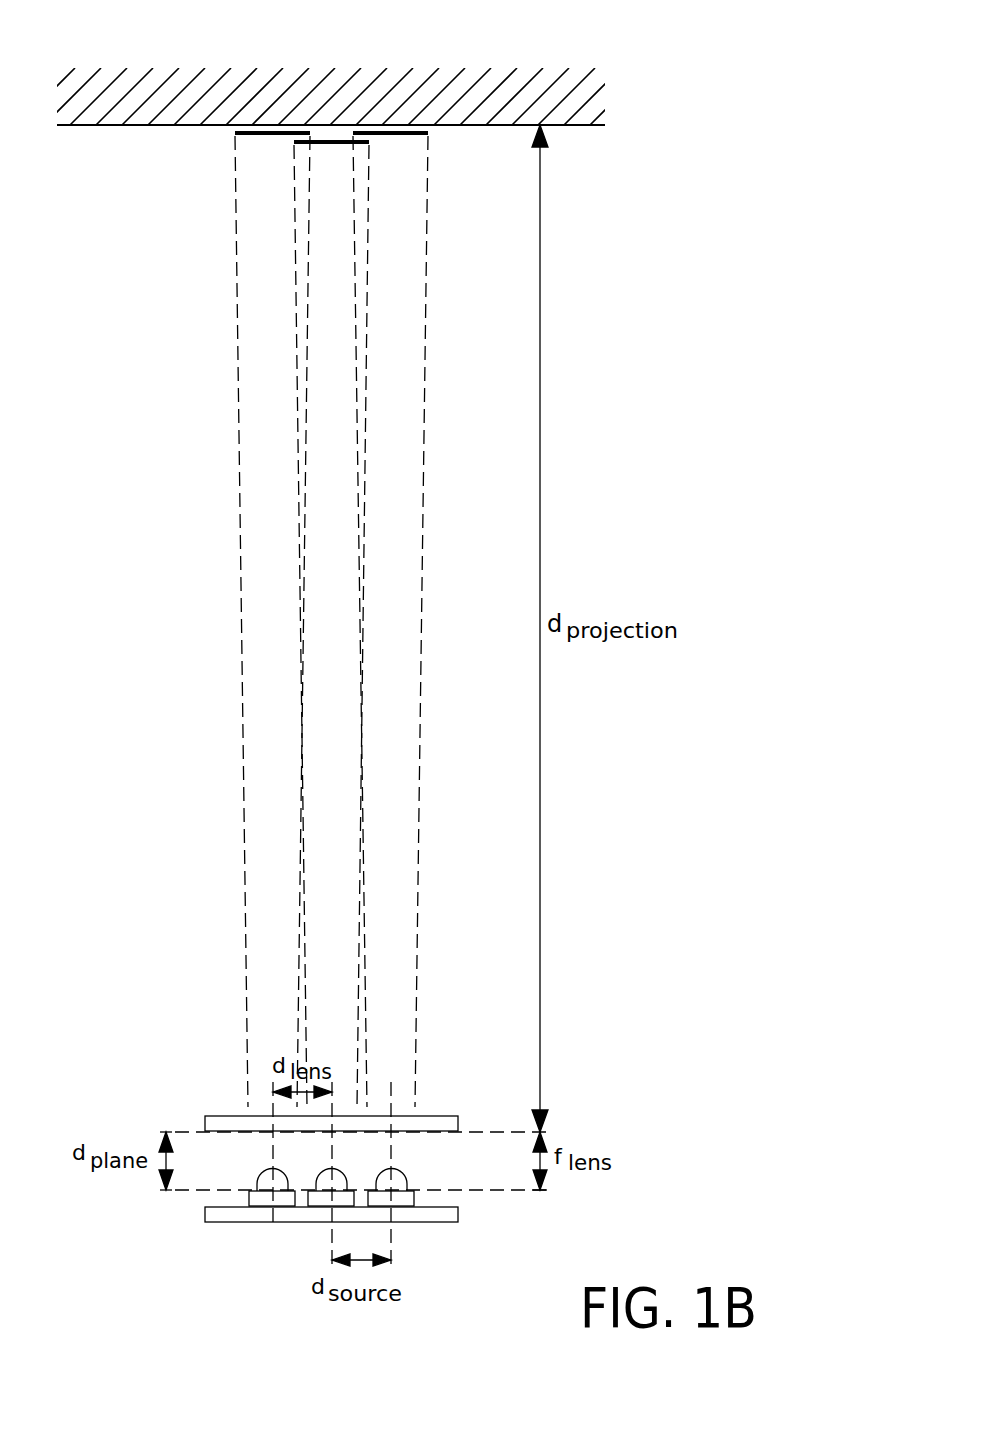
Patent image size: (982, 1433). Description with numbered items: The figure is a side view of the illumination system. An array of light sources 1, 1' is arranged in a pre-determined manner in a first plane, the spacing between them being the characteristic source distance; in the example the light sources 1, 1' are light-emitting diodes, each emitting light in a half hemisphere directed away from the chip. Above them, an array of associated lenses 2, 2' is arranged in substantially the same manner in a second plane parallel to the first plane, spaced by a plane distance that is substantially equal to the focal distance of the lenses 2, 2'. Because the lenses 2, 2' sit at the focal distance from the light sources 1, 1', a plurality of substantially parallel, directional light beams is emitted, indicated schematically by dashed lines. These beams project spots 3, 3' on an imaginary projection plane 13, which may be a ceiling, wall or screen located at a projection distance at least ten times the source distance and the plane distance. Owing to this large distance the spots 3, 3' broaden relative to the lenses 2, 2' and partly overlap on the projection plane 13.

The projection plane 13 is at (443, 82).
The spot 3 is at (250, 156).
The spot 3' is at (312, 164).
The lens 2 is at (331, 1081).
The lens 2' is at (359, 1074).
The light source 1 is at (261, 1178).
The light source 1' is at (345, 1178).